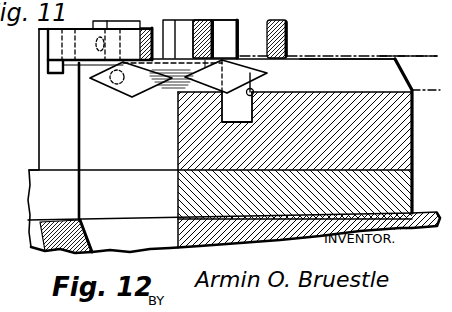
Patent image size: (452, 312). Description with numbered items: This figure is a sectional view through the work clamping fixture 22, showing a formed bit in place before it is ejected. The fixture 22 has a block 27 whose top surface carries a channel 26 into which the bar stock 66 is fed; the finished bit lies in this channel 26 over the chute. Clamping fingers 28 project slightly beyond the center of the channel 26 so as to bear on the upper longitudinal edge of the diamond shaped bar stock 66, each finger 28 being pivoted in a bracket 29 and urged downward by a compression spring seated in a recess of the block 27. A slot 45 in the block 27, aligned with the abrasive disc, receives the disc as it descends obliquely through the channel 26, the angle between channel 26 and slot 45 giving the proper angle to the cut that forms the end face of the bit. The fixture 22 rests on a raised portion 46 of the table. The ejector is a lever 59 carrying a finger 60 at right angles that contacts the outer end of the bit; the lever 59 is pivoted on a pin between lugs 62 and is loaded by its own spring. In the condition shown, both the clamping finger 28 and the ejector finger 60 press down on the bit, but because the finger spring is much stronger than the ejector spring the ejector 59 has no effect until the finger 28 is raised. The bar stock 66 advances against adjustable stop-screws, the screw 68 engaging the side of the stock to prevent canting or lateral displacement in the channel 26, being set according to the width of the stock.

The work clamping fixture 22 is at (406, 140).
The channel 26 is at (333, 72).
The block 27 is at (398, 137).
The clamping finger 28 is at (198, 20).
The bracket 29 is at (222, 25).
The slot 45 is at (258, 90).
The raised portion of the table 46 is at (33, 246).
The ejector lever 59 is at (70, 37).
The finger 60 is at (145, 28).
The lug 62 is at (38, 46).
The bar stock 66 is at (407, 56).
The stop-screw 68 is at (127, 93).